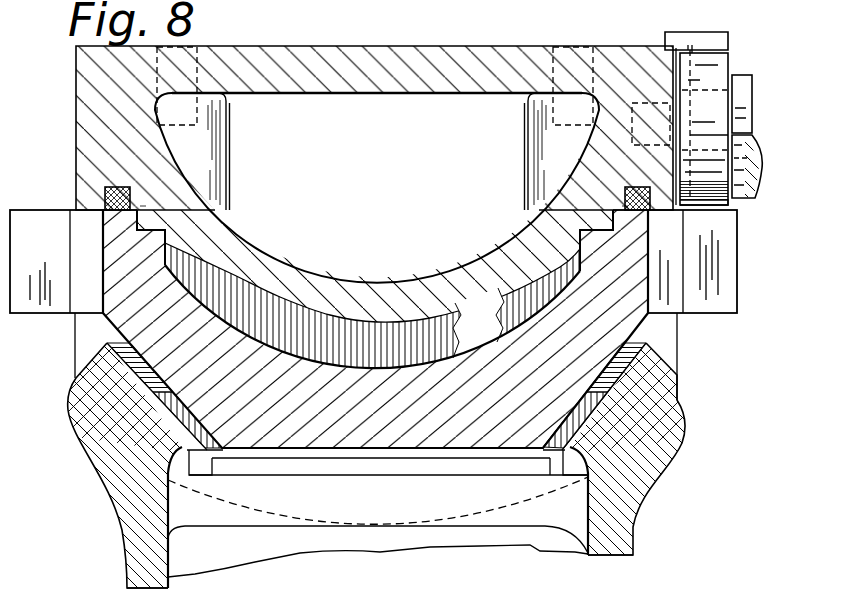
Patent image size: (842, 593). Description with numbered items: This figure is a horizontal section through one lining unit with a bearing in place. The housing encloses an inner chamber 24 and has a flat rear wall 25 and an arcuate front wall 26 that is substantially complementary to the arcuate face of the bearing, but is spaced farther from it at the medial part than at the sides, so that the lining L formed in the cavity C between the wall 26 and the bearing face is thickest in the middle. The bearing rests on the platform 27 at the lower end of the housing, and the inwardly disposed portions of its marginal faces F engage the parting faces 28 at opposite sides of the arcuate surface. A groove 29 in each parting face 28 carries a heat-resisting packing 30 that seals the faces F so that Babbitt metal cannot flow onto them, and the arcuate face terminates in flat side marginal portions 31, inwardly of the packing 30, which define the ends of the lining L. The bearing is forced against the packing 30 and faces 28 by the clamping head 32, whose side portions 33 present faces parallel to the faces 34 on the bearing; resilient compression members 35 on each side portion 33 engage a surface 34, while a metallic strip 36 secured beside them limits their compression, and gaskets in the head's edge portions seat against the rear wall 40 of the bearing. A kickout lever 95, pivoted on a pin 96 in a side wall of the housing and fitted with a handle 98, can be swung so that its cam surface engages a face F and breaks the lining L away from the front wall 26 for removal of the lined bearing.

The inner chamber 24 is at (410, 173).
The flat rear wall 25 is at (290, 62).
The arcuate front wall 26 is at (332, 318).
The platform 27 is at (678, 365).
The parting faces 28 is at (88, 214).
The groove 29 is at (108, 196).
The packing 30 is at (143, 203).
The flat side marginal portions 31 is at (165, 242).
The clamping head 32 is at (122, 552).
The side portions 33 is at (76, 440).
The faces on the bearing 34 is at (203, 461).
The resilient compression members 35 is at (170, 432).
The metallic strip 36 is at (107, 345).
The rear wall of bearing 40 is at (352, 463).
The lever 95 is at (710, 70).
The pin 96 is at (740, 80).
The handle 98 is at (742, 186).
The lining L is at (236, 300).
The cavity C is at (470, 320).
The marginal faces F is at (714, 316).